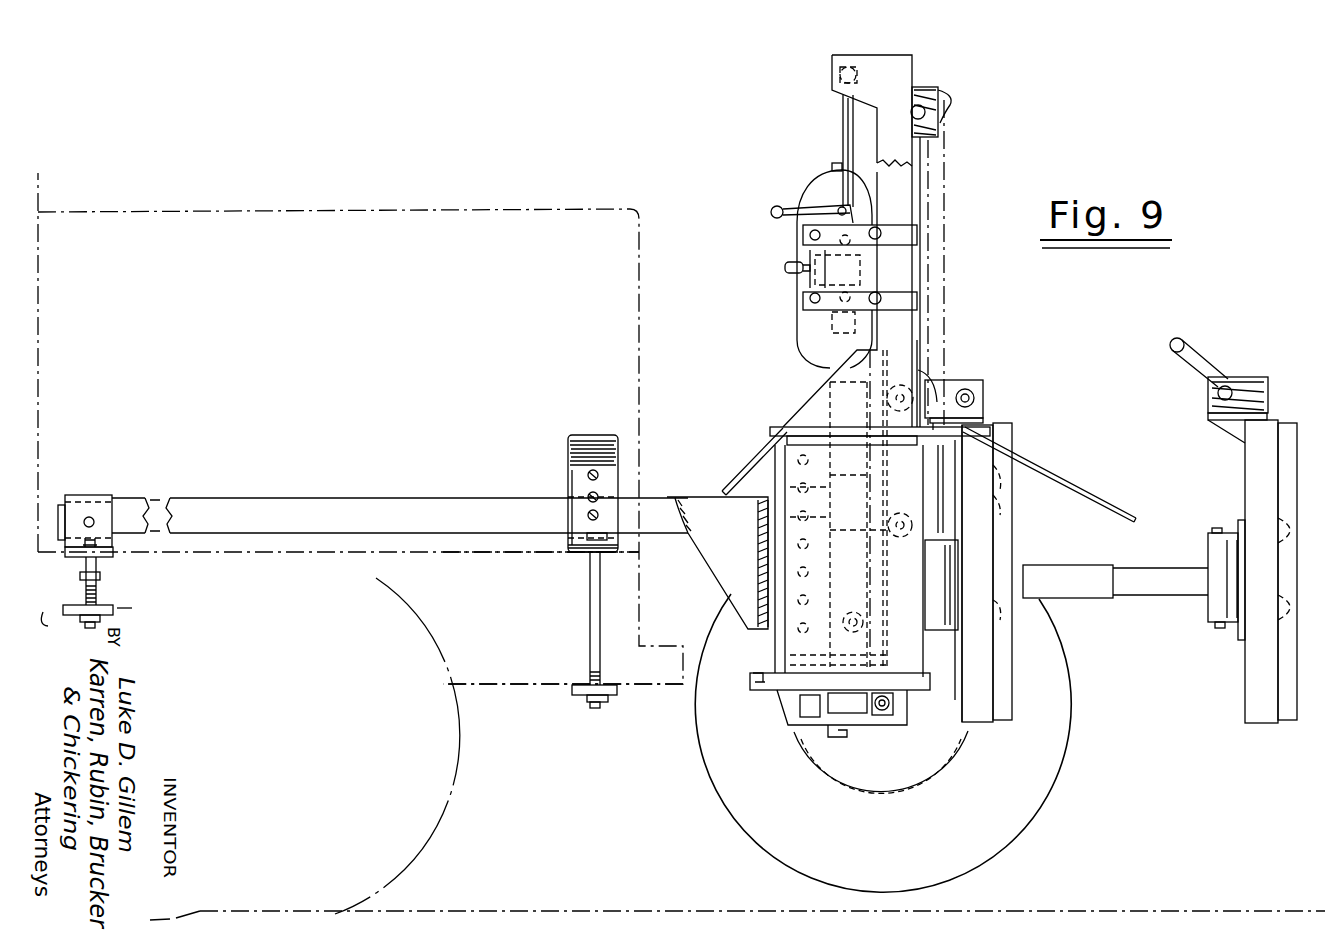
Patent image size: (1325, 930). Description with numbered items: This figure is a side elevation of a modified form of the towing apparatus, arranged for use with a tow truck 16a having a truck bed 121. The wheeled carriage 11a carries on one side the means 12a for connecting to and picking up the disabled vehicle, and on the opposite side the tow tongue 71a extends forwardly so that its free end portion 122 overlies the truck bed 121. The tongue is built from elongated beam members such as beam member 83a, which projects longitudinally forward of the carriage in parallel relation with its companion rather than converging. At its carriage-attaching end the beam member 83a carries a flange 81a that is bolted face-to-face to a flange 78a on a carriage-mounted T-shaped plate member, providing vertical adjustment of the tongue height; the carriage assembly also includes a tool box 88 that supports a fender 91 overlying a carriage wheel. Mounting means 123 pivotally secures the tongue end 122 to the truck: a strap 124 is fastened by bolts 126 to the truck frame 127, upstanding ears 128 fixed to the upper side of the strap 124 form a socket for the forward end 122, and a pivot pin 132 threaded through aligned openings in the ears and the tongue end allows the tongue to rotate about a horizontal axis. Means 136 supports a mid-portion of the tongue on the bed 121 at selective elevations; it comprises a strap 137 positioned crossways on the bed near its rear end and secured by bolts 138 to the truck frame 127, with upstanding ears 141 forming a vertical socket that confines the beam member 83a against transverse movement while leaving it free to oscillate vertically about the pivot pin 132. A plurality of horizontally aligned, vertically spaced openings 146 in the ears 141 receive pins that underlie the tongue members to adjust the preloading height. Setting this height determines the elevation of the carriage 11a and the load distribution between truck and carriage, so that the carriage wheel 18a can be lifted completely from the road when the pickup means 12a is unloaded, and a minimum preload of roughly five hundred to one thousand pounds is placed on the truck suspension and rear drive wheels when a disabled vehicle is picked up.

The carriage 11a is at (998, 360).
The means for connection to and picking up of the disabled vehicle 12a is at (1030, 728).
The tow truck 16a is at (252, 206).
The wheel 18a is at (696, 770).
The tow tongue 71a is at (302, 494).
The flange 78a is at (770, 645).
The flange 81a is at (762, 540).
The beam member 83a is at (436, 497).
The tool box 88 is at (775, 480).
The fender 91 is at (1052, 464).
The truck bed 121 is at (462, 552).
The free end portion 122 is at (62, 515).
The mounting means 123 is at (87, 492).
The strap 124 is at (113, 552).
The bolt 126 is at (97, 570).
The truck frame 127 is at (43, 612).
The upstanding ear 128 is at (75, 508).
The pivot pin 132 is at (95, 521).
The means for supporting a mid-portion of the tow tongue 136 is at (560, 466).
The strap 137 is at (568, 545).
The bolt 138 is at (590, 630).
The upstanding ear 141 is at (578, 487).
The opening 146 is at (599, 516).